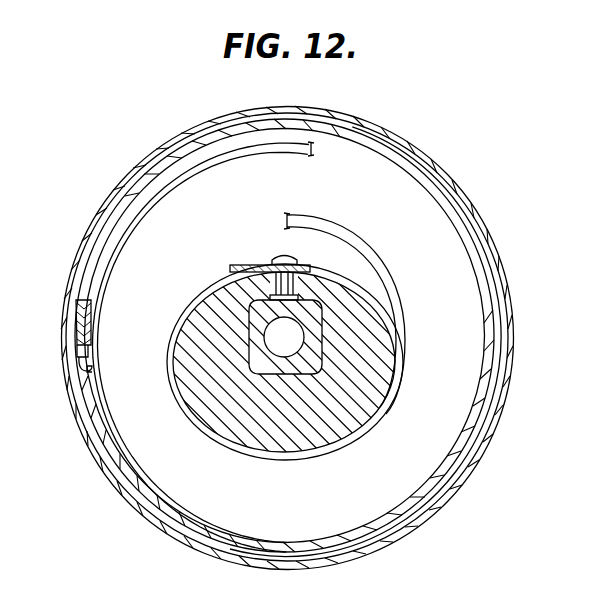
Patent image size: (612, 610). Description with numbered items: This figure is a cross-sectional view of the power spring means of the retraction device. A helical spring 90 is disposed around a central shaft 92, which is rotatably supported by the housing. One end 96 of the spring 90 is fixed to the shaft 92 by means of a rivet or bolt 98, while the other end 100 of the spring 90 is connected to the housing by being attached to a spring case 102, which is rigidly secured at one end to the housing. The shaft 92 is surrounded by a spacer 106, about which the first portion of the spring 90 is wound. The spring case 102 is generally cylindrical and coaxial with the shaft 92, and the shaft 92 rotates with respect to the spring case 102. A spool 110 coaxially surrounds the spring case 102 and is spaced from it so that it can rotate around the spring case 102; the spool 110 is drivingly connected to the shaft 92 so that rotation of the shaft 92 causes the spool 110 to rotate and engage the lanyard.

The helical spring 90 is at (189, 413).
The shaft 92 is at (322, 305).
The one end of spring 96 is at (300, 266).
The rivet or bolt 98 is at (281, 259).
The other end of spring 100 is at (91, 372).
The spring case 102 is at (144, 496).
The spacer 106 is at (182, 333).
The spool 110 is at (103, 471).